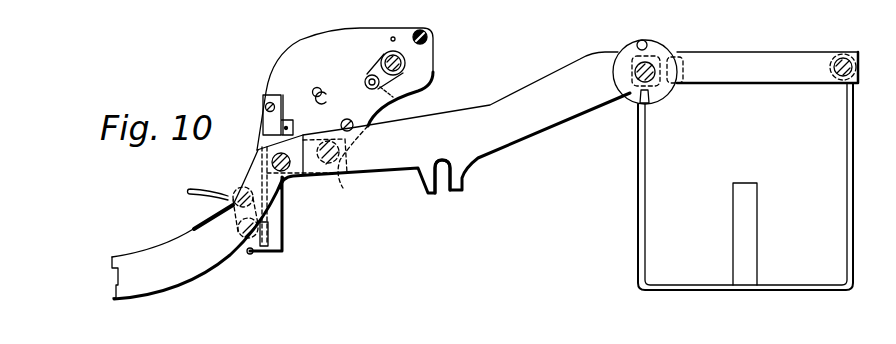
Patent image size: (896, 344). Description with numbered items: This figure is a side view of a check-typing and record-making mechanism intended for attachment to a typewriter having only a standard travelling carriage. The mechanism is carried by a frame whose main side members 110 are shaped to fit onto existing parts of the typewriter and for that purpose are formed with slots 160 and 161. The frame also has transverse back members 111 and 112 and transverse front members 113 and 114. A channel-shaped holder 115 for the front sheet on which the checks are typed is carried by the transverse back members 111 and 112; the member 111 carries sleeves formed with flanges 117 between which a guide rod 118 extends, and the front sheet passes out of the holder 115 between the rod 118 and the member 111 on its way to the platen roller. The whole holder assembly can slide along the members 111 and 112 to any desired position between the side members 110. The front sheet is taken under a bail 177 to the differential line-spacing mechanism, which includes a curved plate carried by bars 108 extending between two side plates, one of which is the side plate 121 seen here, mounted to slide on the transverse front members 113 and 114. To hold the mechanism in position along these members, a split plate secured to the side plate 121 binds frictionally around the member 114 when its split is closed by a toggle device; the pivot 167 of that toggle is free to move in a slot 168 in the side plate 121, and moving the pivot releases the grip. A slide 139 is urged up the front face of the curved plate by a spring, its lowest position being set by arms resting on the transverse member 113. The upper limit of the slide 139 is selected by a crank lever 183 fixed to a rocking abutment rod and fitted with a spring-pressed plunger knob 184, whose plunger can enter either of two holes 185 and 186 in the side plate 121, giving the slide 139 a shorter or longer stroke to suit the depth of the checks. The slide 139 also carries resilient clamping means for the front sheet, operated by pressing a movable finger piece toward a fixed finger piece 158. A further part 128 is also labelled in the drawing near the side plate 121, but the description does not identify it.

The bars 108 is at (433, 37).
The main side members 110 is at (388, 177).
The transverse back member 111 is at (615, 72).
The transverse back member 112 is at (840, 54).
The transverse front member 113 is at (273, 158).
The transverse front member 114 is at (318, 171).
The channel-shaped holder 115 is at (852, 166).
The flanges 117 is at (664, 45).
The guide rod 118 is at (644, 40).
The side plate 121 is at (323, 42).
The bracket 128 is at (284, 215).
The slide 139 is at (234, 229).
The fixed finger piece 158 is at (213, 189).
The slot 160 is at (447, 180).
The slot 161 is at (121, 300).
The pivot 167 is at (328, 100).
The slot 168 is at (317, 88).
The bail 177 is at (252, 255).
The crank lever 183 is at (405, 76).
The knob 184 is at (370, 75).
The hole 185 is at (396, 93).
The hole 186 is at (393, 37).